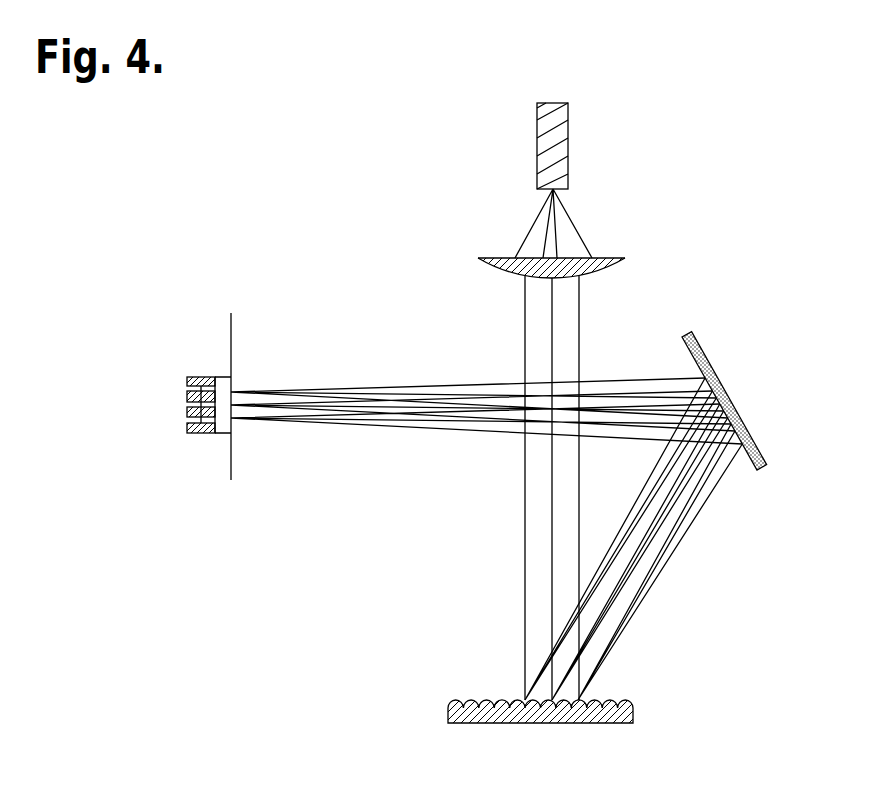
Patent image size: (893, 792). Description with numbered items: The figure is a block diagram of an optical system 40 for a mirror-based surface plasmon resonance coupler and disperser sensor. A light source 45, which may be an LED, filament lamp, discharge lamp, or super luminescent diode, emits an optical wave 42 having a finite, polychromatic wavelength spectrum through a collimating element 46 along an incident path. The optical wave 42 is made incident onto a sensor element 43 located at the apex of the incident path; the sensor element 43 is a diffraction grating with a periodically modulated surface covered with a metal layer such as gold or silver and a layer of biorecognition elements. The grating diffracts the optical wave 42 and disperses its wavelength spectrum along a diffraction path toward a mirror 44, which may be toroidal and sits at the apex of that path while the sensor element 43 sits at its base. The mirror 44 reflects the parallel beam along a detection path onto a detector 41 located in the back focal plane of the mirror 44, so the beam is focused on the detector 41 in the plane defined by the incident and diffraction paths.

The optical system 40 is at (171, 131).
The detector 41 is at (186, 400).
The optical wave 42 is at (524, 548).
The sensor element 43 is at (447, 714).
The mirror 44 is at (720, 384).
The light source 45 is at (536, 132).
The collimating element 46 is at (477, 258).